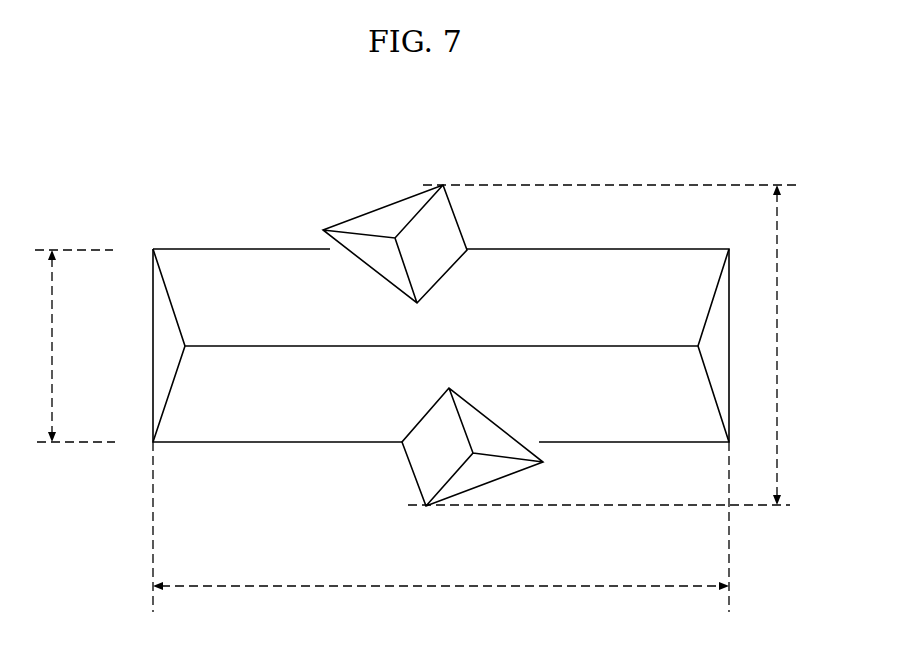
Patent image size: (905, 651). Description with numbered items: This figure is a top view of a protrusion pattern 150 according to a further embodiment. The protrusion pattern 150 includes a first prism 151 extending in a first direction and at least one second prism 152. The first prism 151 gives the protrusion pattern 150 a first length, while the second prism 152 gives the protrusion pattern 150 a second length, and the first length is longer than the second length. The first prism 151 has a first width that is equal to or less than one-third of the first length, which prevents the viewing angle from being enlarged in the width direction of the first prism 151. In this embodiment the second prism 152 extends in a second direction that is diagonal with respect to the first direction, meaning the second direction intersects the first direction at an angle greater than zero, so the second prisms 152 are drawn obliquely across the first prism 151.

The protrusion pattern 150 is at (213, 134).
The first prism 151 is at (278, 249).
The second prism 152 is at (360, 272).